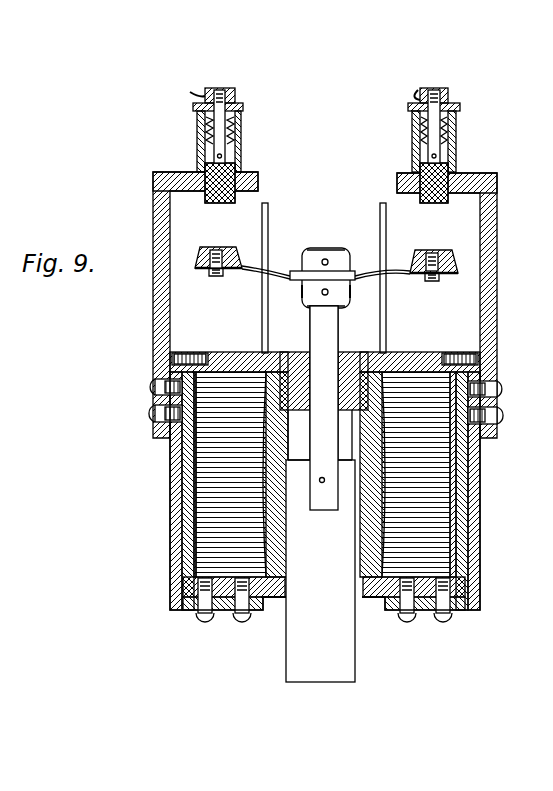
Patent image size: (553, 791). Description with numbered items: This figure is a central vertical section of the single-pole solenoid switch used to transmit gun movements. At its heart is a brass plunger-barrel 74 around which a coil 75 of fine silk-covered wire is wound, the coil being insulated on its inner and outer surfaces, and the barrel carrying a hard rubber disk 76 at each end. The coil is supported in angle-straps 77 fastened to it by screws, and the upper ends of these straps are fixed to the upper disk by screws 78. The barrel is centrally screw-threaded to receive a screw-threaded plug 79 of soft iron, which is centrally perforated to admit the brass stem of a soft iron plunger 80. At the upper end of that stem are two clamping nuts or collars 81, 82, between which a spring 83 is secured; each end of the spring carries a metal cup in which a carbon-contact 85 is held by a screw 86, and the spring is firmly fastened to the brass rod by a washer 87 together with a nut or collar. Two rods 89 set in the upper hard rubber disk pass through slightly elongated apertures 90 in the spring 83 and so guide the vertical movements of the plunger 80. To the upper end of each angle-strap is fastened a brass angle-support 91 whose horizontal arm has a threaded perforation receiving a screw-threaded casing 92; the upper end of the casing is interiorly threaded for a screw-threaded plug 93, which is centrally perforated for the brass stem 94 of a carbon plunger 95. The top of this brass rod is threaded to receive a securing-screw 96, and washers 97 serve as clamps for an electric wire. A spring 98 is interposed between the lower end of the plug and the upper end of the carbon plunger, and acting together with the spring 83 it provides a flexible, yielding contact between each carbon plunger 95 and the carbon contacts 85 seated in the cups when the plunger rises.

The plunger-barrel 74 is at (175, 482).
The coil 75 is at (283, 532).
The hard rubber disk 76 is at (420, 357).
The angle-strap 77 is at (172, 567).
The screw 78 is at (188, 356).
The screw-threaded plug 79 is at (344, 356).
The plunger 80 is at (287, 600).
The clamping nut or collar 81 is at (348, 264).
The clamping nut or collar 82 is at (303, 290).
The spring 83 is at (308, 262).
The carbon-contact 85 is at (229, 246).
The screw 86 is at (218, 277).
The washer 87 is at (210, 252).
The rod 89 is at (262, 341).
The elongated aperture 90 is at (272, 272).
The brass angle-support 91 is at (154, 330).
The screw-threaded casing 92 is at (241, 165).
The screw-threaded plug 93 is at (243, 106).
The brass stem 94 is at (225, 132).
The carbon plunger 95 is at (258, 183).
The securing-screw 96 is at (226, 90).
The washer 97 is at (190, 92).
The spring 98 is at (205, 127).